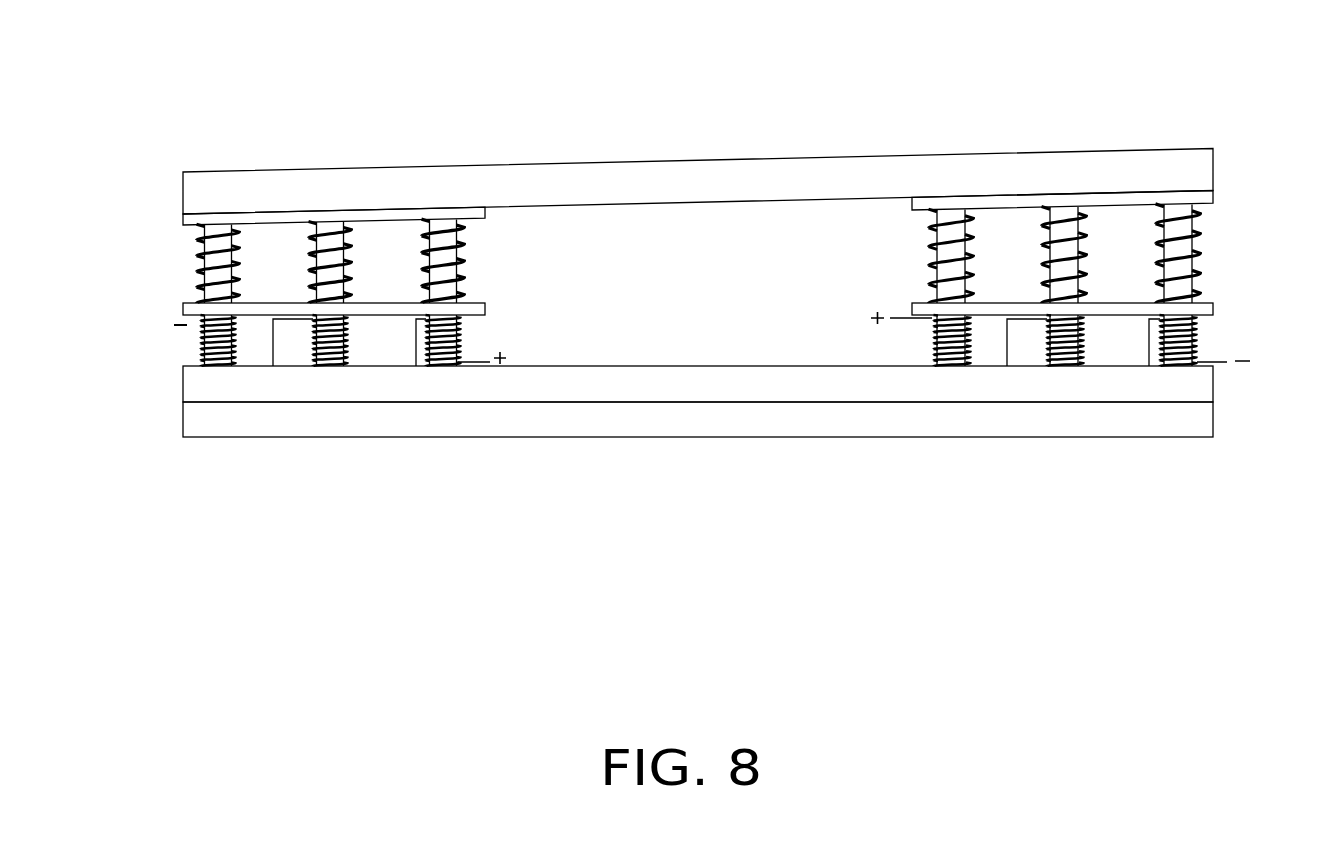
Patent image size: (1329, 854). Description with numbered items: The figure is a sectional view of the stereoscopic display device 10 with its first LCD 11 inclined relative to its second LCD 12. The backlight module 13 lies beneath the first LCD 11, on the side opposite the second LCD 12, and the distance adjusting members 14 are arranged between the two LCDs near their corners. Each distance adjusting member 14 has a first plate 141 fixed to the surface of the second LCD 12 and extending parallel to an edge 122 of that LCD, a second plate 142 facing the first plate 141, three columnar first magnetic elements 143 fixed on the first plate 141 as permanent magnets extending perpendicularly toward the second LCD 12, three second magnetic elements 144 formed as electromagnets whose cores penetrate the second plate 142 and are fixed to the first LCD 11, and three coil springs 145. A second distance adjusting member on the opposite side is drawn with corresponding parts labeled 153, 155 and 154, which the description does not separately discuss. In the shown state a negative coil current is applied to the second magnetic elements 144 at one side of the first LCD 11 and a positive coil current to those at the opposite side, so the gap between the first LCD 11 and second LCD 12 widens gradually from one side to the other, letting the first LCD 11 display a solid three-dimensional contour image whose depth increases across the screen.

The stereoscopic display device 10 is at (696, 52).
The first LCD 11 is at (278, 380).
The second LCD 12 is at (262, 190).
The backlight module 13 is at (388, 418).
The distance adjusting member 14 is at (162, 270).
The edge of the second LCD 122 is at (1178, 177).
The first plate 141 is at (195, 198).
The second plate 142 is at (188, 307).
The first magnetic element 143 is at (212, 247).
The second magnetic element 144 is at (207, 343).
The coil spring 145 is at (207, 280).
The guide rod 153 is at (1188, 218).
The second spring 154 is at (1192, 337).
The first spring 155 is at (1193, 248).